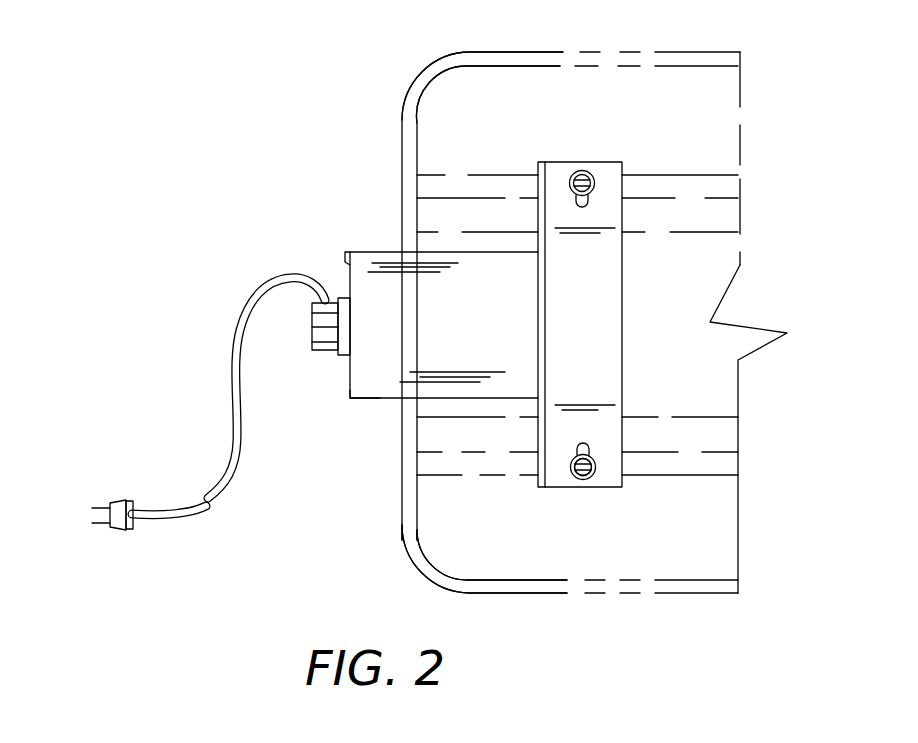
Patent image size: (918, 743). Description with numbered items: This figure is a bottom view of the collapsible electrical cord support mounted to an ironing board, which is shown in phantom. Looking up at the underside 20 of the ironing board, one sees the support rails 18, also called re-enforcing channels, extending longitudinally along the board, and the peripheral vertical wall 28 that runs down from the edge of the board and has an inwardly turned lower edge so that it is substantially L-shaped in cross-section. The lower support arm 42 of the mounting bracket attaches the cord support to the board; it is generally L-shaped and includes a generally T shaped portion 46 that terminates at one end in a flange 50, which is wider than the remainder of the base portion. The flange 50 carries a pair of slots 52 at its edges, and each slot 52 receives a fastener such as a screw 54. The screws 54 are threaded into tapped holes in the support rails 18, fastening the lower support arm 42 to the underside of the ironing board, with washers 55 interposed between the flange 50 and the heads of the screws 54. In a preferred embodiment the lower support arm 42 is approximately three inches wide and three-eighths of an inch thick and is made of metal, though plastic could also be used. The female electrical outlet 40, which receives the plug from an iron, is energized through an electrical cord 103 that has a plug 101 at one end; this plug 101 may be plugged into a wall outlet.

The support rails 18 is at (690, 185).
The underside 20 is at (598, 115).
The peripheral vertical wall 28 is at (488, 597).
The female electrical outlet 40 is at (322, 353).
The lower support arm 42 is at (375, 381).
The T shaped portion 46 is at (466, 327).
The flange 50 is at (607, 302).
The slots 52 is at (590, 203).
The screws 54 is at (577, 478).
The washers 55 is at (596, 470).
The plug 101 is at (122, 502).
The electrical cord 103 is at (187, 519).